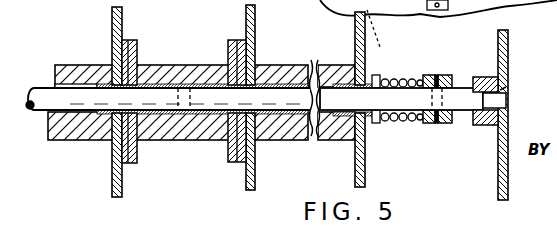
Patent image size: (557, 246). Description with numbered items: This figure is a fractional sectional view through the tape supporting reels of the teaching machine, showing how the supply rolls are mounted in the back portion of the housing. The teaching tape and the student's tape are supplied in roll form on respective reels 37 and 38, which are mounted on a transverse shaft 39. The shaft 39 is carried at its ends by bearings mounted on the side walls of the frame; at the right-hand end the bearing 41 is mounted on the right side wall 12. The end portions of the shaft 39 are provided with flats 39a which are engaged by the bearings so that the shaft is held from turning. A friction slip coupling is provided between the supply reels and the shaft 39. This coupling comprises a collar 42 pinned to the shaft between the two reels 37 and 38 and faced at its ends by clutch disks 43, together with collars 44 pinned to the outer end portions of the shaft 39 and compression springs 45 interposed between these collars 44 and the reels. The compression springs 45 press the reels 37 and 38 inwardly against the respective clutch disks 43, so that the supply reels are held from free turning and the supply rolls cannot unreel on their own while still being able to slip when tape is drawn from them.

The right side wall 12 is at (498, 172).
The reel 37 is at (112, 168).
The reel 38 is at (355, 160).
The transverse shaft 39 is at (45, 88).
The flats 39a is at (480, 78).
The bearing 41 is at (506, 87).
The collar 42 is at (162, 76).
The clutch disks 43 is at (133, 58).
The collars 44 is at (447, 55).
The compression springs 45 is at (400, 80).